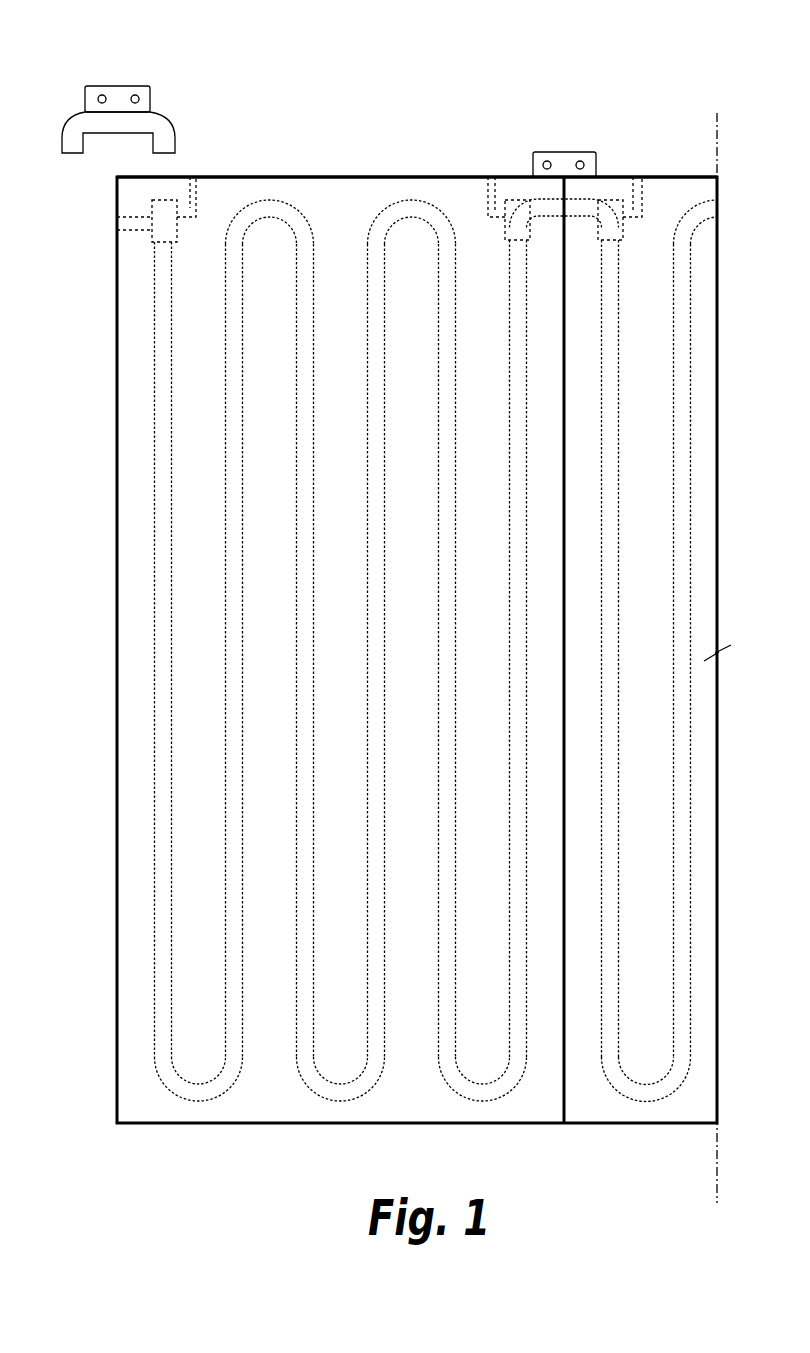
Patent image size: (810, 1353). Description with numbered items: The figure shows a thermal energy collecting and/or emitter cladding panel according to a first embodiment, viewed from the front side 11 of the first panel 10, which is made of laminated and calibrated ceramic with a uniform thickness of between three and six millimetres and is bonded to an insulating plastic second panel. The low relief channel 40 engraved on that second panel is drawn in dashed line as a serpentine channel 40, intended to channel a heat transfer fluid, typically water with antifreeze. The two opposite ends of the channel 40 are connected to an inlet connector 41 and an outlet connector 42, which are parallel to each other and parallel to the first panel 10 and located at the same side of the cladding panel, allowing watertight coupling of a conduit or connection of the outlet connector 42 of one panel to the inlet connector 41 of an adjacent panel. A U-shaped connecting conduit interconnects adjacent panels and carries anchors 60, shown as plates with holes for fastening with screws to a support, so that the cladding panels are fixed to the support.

The first panel 10 is at (268, 177).
The front side 11 is at (340, 200).
The channel 40 is at (410, 200).
The inlet connector 41 is at (117, 229).
The outlet connector 42 is at (495, 177).
The anchor 60 is at (117, 86).